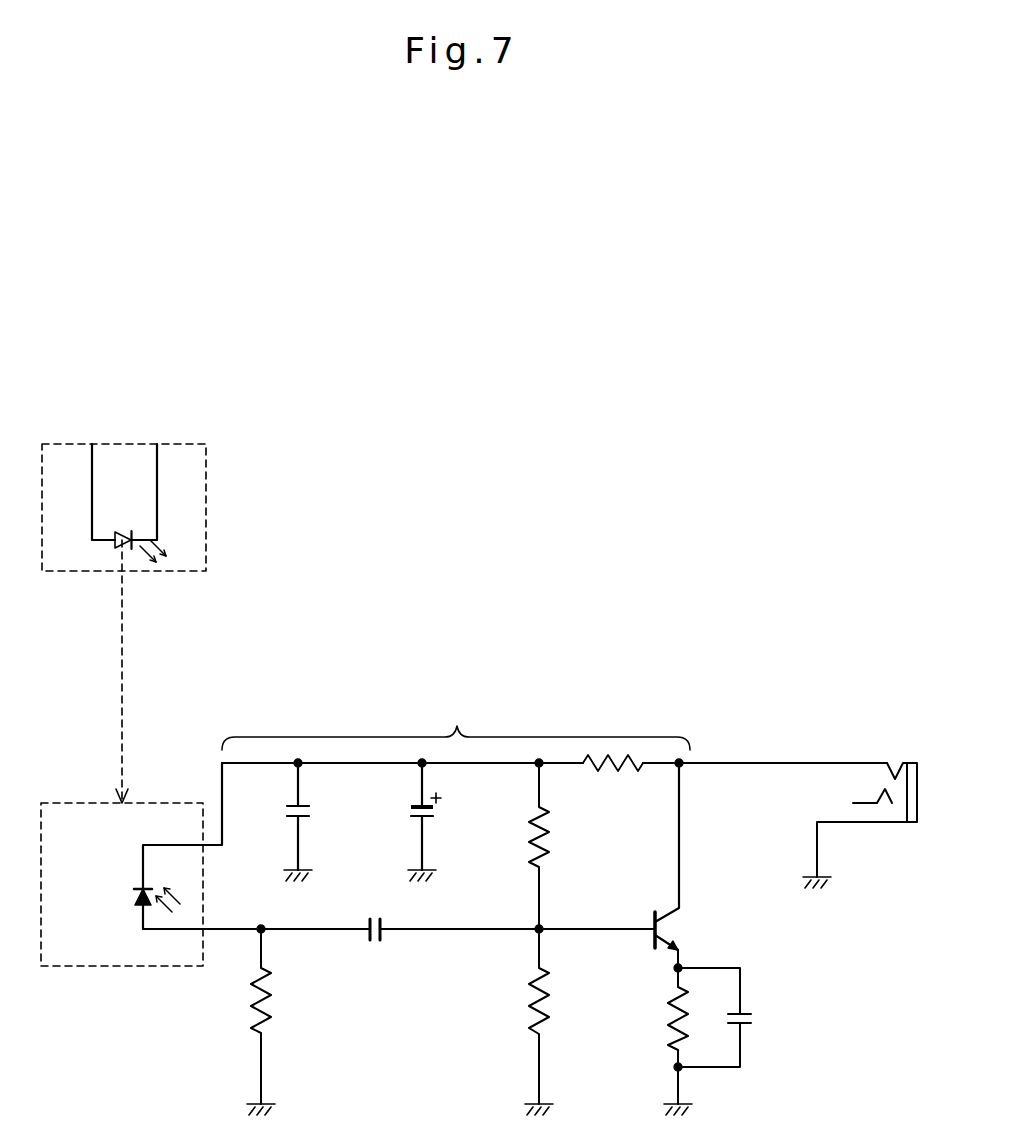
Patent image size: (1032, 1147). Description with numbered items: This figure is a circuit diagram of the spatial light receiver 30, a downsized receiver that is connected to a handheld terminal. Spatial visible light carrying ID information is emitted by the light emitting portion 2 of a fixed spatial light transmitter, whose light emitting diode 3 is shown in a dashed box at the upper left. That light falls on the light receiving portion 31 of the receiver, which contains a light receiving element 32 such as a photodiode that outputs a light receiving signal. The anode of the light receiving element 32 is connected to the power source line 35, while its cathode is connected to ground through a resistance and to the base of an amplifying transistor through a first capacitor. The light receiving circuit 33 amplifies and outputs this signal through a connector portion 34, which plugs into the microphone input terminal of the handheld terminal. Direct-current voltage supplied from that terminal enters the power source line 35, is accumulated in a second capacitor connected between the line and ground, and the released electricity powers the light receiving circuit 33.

The light emitting portion 2 is at (206, 508).
The light emitting diode 3 is at (115, 540).
The spatial light receiver 30 is at (694, 724).
The light receiving portion 31 is at (78, 803).
The light receiving element 32 is at (142, 893).
The light receiving circuit 33 is at (554, 784).
The connector portion 34 is at (890, 762).
The power source line 35 is at (354, 763).